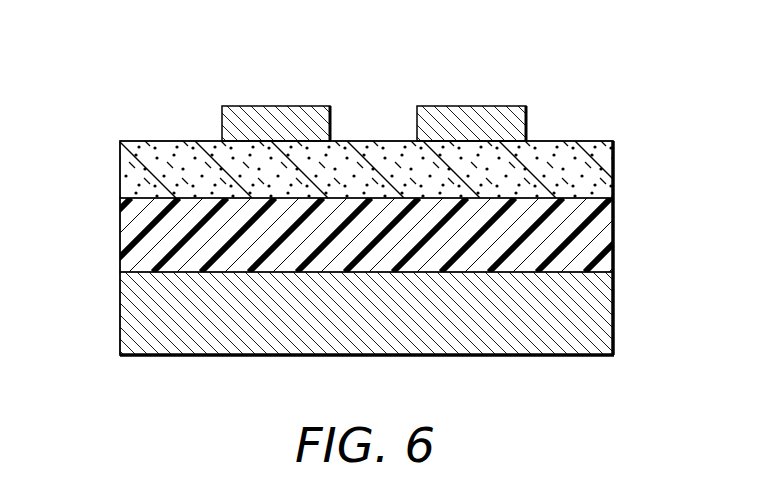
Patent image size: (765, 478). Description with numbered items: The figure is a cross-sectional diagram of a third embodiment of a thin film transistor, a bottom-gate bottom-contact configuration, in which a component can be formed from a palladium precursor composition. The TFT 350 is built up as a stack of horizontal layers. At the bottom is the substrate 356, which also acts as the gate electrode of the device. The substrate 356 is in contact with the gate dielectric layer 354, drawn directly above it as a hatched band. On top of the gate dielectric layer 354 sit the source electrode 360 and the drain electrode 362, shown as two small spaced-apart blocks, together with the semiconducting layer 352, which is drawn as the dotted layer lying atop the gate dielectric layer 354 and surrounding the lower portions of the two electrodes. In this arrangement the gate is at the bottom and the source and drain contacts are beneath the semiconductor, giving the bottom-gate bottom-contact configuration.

The TFT 350 is at (143, 58).
The semiconducting layer 352 is at (606, 170).
The gate dielectric layer 354 is at (112, 198).
The substrate 356 is at (606, 312).
The source electrode 360 is at (275, 106).
The drain electrode 362 is at (470, 106).